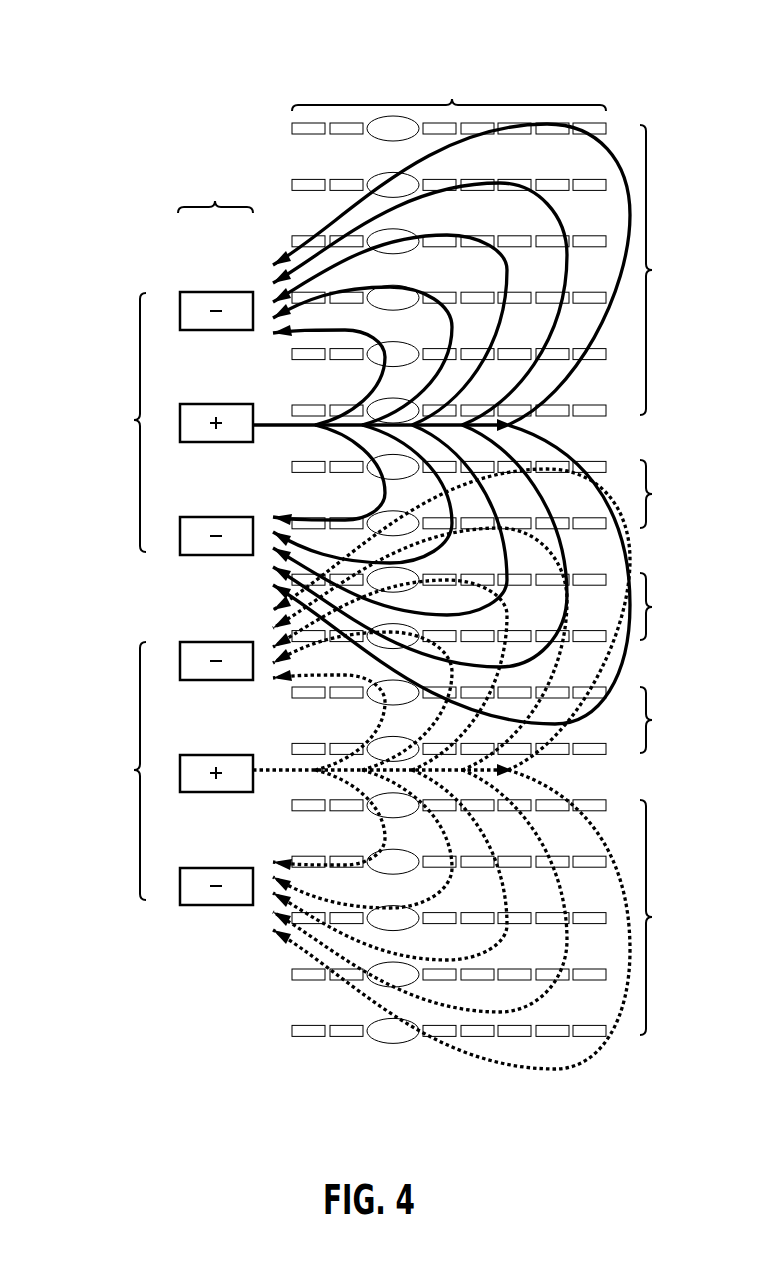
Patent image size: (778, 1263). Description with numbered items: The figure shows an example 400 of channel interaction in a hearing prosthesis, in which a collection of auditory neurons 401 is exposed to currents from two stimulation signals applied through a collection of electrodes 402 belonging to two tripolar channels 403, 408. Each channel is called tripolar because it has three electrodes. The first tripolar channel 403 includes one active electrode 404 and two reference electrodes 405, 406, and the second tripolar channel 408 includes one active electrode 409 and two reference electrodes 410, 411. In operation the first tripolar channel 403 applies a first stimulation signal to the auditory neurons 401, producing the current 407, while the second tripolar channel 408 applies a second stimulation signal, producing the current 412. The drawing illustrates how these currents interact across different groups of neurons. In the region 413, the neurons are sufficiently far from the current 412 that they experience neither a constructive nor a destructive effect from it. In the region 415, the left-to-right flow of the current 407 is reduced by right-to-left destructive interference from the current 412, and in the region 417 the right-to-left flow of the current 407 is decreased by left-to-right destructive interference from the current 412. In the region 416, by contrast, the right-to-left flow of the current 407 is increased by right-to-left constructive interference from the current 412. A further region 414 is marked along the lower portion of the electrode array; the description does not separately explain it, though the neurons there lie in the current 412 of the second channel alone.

The example 400 is at (184, 76).
The collection of auditory neurons 401 is at (452, 98).
The collection of electrodes 402 is at (215, 200).
The first tripolar channel 403 is at (140, 340).
The active electrode 404 is at (217, 404).
The reference electrode 405 is at (217, 292).
The reference electrode 406 is at (217, 517).
The current corresponding to the first stimulation signal 407 is at (610, 147).
The second tripolar channel 408 is at (140, 677).
The active electrode 409 is at (217, 755).
The reference electrode 410 is at (217, 642).
The reference electrode 411 is at (217, 868).
The current corresponding to the second stimulation signal 412 is at (490, 1062).
The region 413 is at (652, 270).
The second channel lower electrode group 414 is at (652, 917).
The region 415 is at (652, 494).
The region 416 is at (652, 607).
The region 417 is at (652, 720).